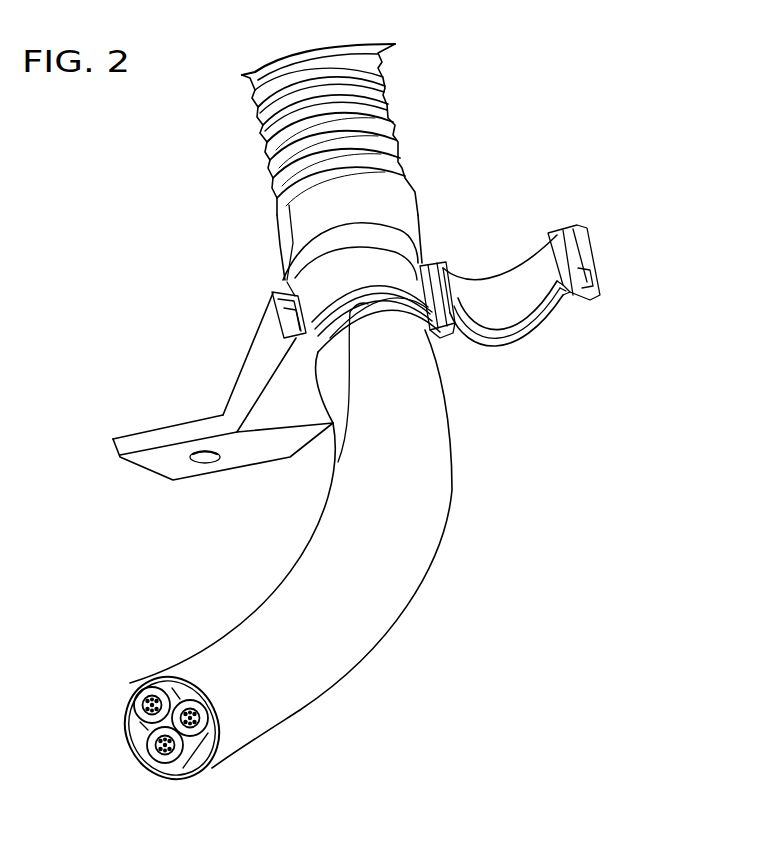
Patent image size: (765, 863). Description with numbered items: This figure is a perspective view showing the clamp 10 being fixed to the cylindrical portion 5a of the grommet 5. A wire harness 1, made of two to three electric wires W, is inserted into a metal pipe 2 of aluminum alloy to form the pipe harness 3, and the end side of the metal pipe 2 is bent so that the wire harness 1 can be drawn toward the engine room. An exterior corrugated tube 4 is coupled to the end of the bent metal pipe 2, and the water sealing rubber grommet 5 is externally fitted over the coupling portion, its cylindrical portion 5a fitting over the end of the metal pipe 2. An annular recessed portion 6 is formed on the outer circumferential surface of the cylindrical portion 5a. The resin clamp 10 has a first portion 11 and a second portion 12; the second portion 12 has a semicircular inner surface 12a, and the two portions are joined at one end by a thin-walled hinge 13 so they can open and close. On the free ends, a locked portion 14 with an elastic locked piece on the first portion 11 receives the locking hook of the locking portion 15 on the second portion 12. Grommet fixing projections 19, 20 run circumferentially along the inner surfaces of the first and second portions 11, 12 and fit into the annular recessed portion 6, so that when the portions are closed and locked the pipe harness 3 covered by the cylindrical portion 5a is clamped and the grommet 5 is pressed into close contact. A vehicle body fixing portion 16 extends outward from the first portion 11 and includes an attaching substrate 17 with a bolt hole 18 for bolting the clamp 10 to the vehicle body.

The wire harness 1 is at (135, 719).
The electric wires W is at (188, 758).
The metal pipe 2 is at (353, 272).
The pipe harness 3 is at (437, 568).
The corrugated tube 4 is at (340, 63).
The grommet 5 is at (423, 183).
The cylindrical portion 5a is at (293, 284).
The annular recessed portion 6 is at (340, 458).
The clamp 10 is at (528, 242).
The first portion 11 is at (440, 340).
The second portion 12 is at (540, 340).
The semicircular inner surface 12a is at (488, 287).
The thin-walled hinge 13 is at (430, 255).
The locked portion 14 is at (292, 325).
The locking portion 15 is at (577, 247).
The vehicle body fixing portion 16 is at (147, 427).
The attaching substrate 17 is at (160, 463).
The bolt hole 18 is at (207, 460).
The grommet fixing projection 19 is at (448, 343).
The grommet fixing projection 20 is at (530, 315).